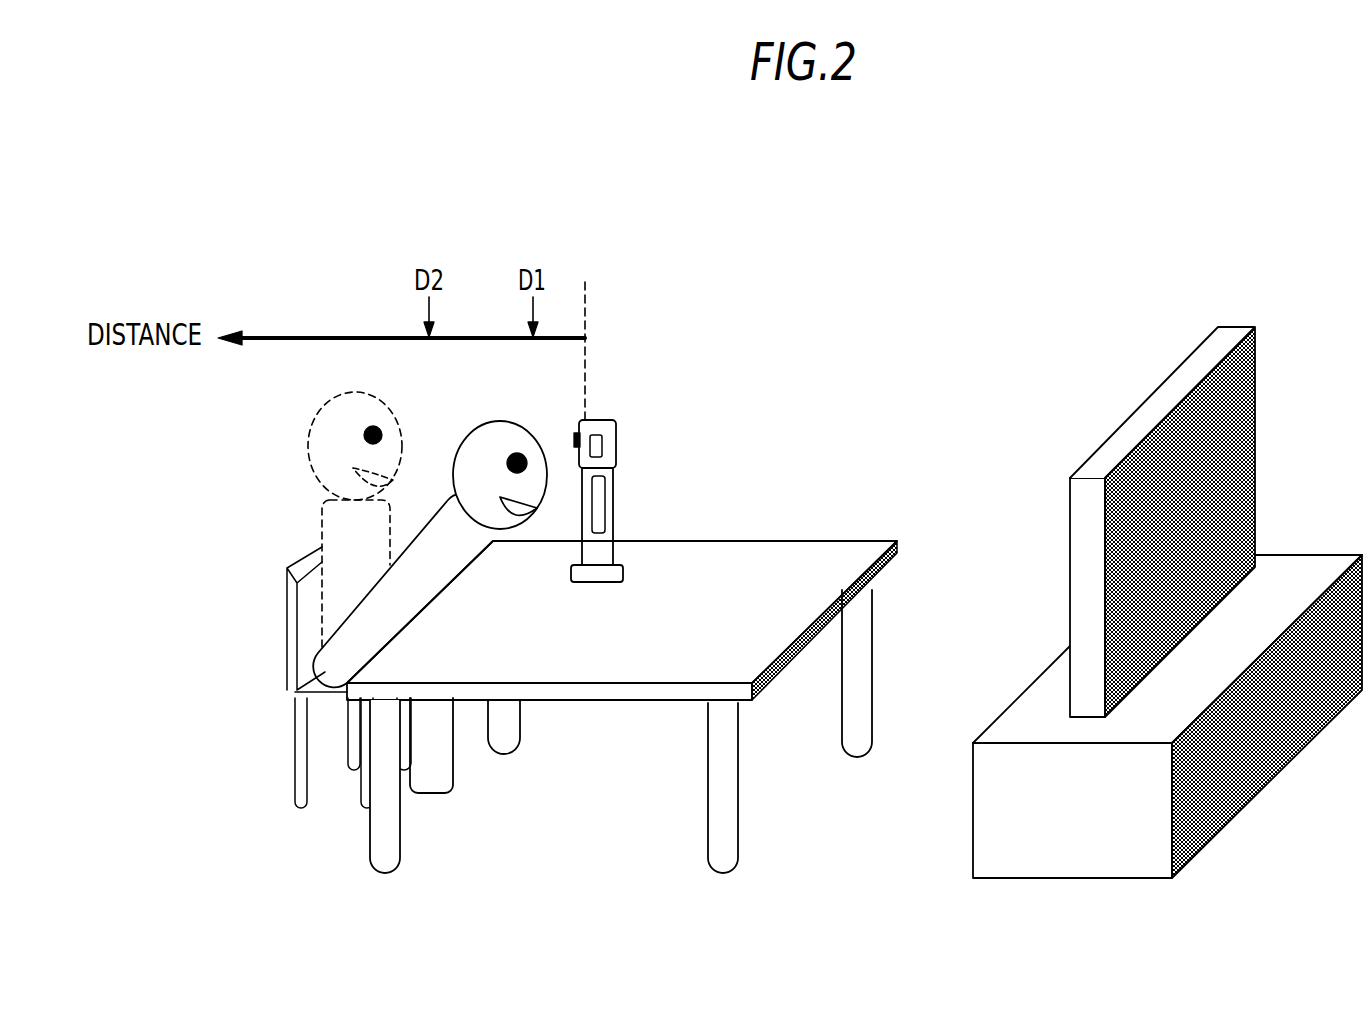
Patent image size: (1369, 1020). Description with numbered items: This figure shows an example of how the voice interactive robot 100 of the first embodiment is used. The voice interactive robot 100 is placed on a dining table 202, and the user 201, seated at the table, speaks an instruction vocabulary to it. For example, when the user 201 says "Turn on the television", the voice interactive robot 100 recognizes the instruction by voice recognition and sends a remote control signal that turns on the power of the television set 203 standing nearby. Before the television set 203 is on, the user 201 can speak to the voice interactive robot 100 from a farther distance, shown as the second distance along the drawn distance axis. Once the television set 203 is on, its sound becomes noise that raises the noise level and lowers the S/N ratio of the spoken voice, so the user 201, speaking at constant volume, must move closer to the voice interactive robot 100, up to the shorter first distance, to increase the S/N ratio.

The voice interactive robot 100 is at (616, 426).
The user 201 is at (500, 421).
The dining table 202 is at (899, 550).
The television set 203 is at (1256, 372).